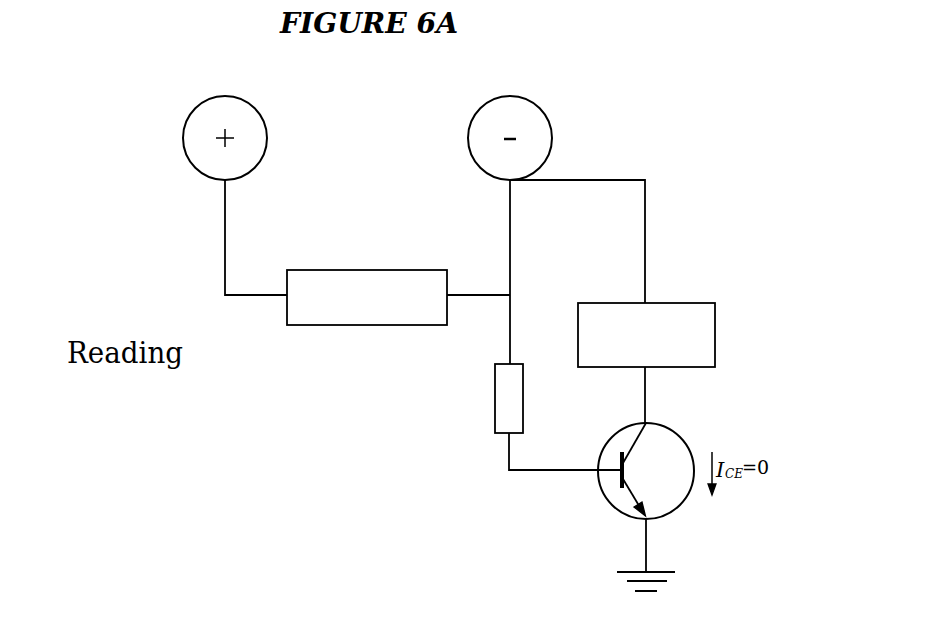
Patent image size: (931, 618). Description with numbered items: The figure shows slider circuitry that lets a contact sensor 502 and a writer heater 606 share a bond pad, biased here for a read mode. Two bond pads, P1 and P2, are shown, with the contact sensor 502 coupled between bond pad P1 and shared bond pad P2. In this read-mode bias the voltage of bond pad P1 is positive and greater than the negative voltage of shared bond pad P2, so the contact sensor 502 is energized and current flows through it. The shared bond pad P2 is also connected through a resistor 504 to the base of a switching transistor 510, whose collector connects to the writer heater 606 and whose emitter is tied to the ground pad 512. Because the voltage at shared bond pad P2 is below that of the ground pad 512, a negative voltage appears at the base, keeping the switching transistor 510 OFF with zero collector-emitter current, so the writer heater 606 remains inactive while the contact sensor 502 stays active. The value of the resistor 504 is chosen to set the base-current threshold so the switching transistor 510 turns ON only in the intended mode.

The bond pad P1 is at (186, 120).
The shared bond pad P2 is at (552, 123).
The contact sensor 502 is at (386, 270).
The resistor 504 is at (494, 399).
The switching transistor 510 is at (676, 432).
The ground pad 512 is at (624, 580).
The writer heater 606 is at (715, 330).